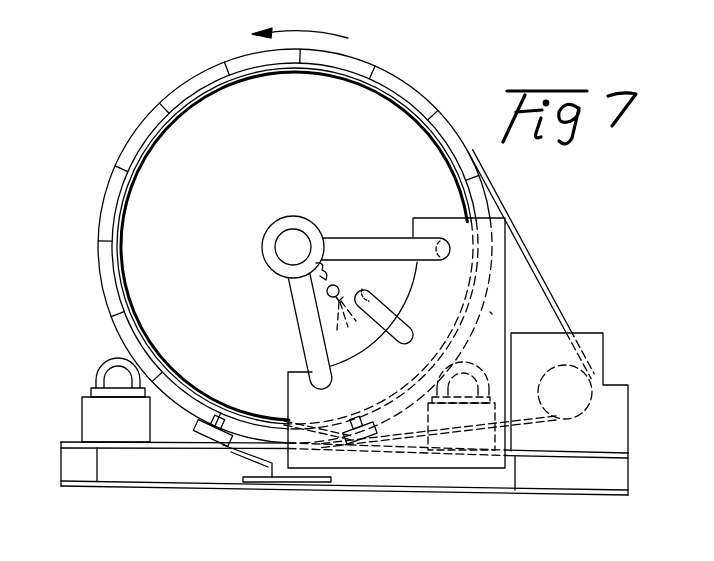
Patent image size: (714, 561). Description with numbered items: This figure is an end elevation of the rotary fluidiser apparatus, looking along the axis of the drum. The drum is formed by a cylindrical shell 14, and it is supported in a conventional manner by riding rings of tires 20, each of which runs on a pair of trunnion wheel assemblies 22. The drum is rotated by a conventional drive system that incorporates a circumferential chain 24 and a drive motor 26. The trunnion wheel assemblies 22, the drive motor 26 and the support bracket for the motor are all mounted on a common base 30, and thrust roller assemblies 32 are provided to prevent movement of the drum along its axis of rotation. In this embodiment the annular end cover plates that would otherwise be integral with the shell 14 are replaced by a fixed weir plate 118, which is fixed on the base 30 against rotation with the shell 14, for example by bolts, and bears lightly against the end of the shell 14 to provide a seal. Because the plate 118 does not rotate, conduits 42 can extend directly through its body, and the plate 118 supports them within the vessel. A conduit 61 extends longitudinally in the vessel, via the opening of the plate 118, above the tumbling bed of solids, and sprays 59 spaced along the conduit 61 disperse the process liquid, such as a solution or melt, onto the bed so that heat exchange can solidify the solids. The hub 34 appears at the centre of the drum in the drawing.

The cylindrical shell 14 is at (180, 95).
The riding rings of tires 20 is at (99, 216).
The trunnion wheel assemblies 22 is at (97, 374).
The circumferential chain 24 is at (533, 270).
The drive motor 26 is at (590, 405).
The common base 30 is at (74, 487).
The thrust roller assemblies 32 is at (200, 444).
The hub 34 is at (271, 225).
The conduits 42 is at (447, 218).
The sprays 59 is at (334, 301).
The conduit 61 is at (335, 282).
The fixed weir plate 118 is at (490, 312).